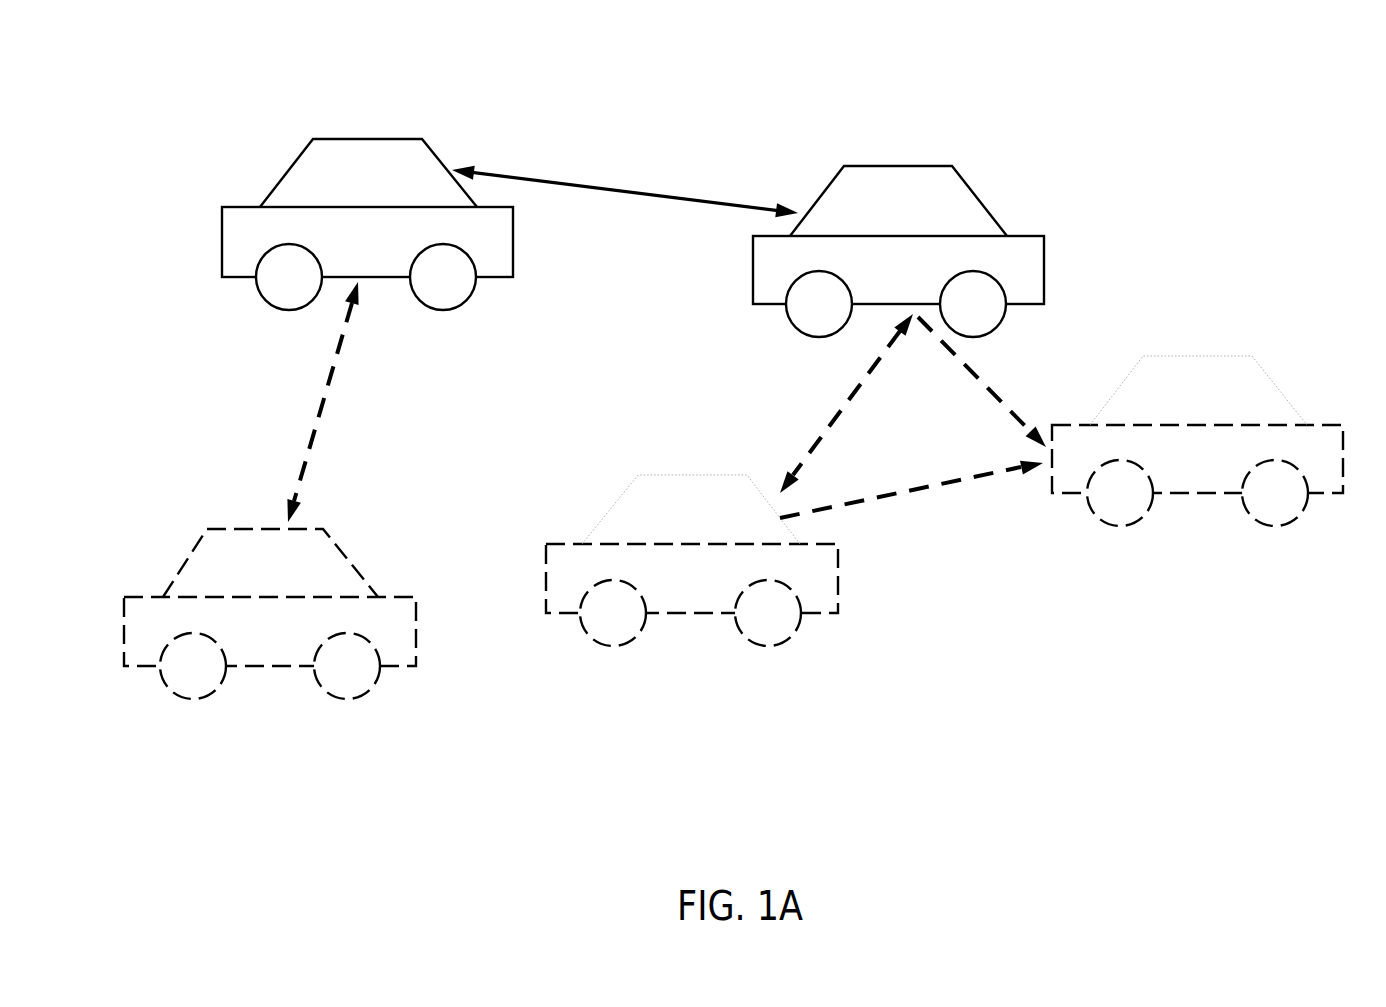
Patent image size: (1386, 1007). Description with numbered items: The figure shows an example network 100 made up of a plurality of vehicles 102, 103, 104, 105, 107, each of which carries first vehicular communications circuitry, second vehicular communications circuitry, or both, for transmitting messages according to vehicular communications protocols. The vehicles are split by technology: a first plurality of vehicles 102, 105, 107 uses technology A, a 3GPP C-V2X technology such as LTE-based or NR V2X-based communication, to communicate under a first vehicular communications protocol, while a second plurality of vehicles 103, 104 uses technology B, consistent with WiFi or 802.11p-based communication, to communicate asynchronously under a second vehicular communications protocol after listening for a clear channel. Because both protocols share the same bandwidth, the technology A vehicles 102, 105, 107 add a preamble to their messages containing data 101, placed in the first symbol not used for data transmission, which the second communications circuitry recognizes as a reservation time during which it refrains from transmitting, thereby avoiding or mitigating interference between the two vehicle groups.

The network 100 is at (1150, 69).
The data 101 is at (562, 182).
The vehicle 102 is at (908, 166).
The vehicle 103 is at (310, 529).
The vehicle 104 is at (367, 139).
The vehicle 105 is at (675, 475).
The vehicle 107 is at (1202, 356).